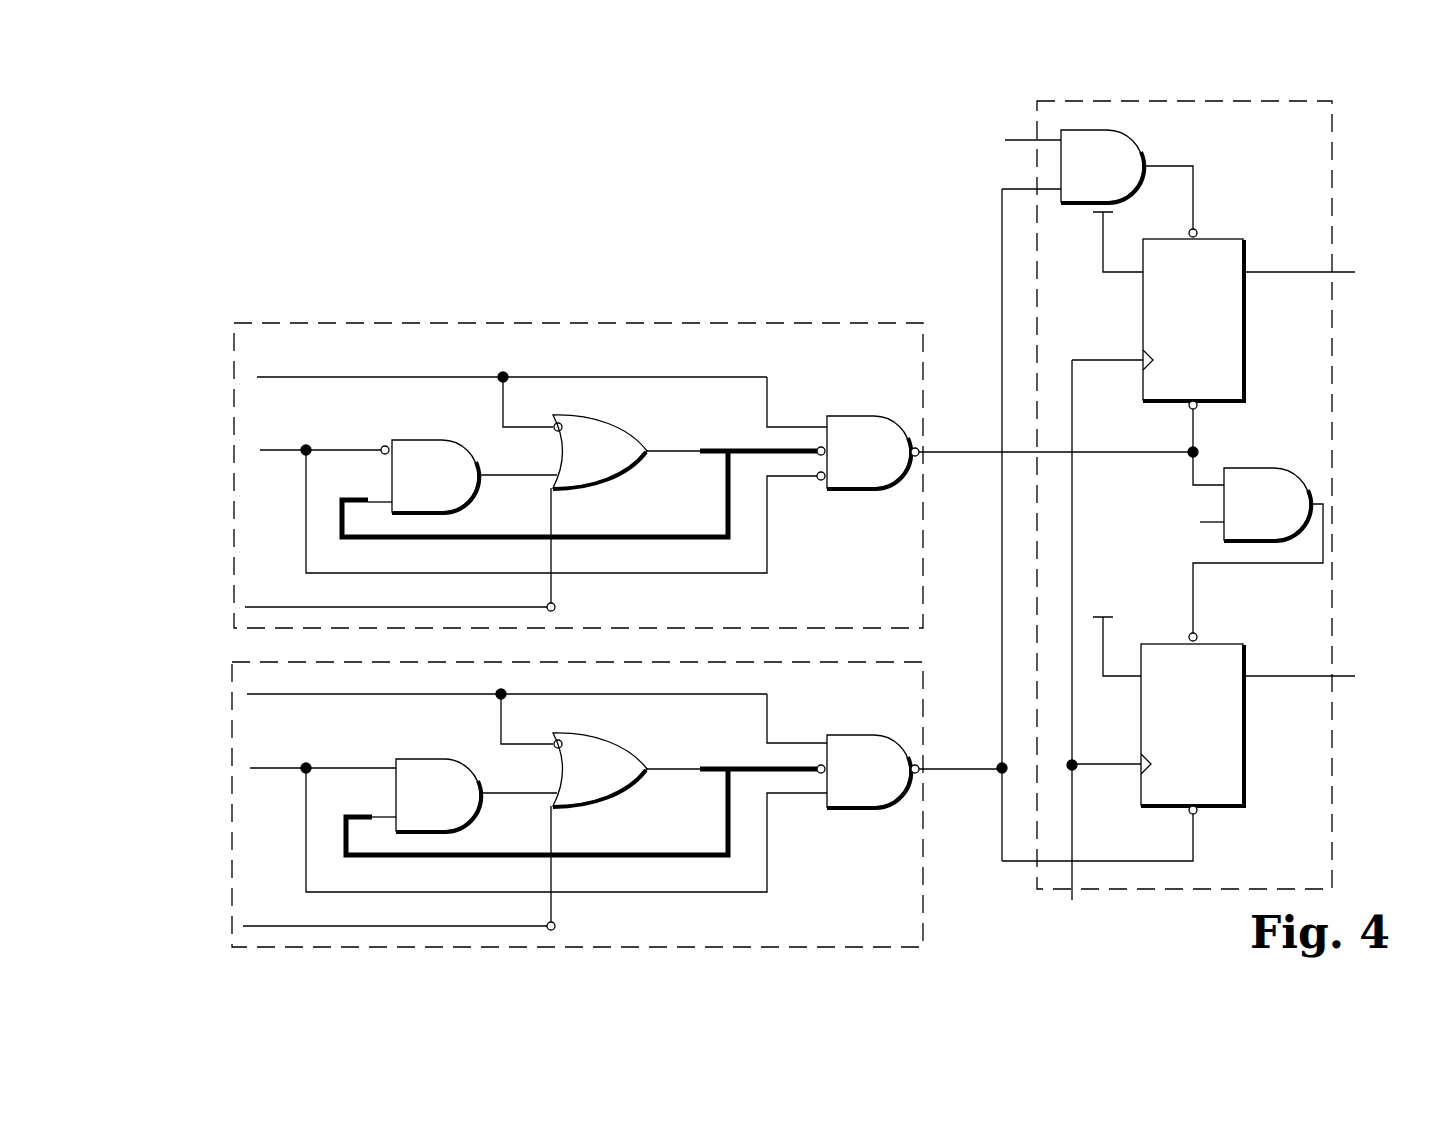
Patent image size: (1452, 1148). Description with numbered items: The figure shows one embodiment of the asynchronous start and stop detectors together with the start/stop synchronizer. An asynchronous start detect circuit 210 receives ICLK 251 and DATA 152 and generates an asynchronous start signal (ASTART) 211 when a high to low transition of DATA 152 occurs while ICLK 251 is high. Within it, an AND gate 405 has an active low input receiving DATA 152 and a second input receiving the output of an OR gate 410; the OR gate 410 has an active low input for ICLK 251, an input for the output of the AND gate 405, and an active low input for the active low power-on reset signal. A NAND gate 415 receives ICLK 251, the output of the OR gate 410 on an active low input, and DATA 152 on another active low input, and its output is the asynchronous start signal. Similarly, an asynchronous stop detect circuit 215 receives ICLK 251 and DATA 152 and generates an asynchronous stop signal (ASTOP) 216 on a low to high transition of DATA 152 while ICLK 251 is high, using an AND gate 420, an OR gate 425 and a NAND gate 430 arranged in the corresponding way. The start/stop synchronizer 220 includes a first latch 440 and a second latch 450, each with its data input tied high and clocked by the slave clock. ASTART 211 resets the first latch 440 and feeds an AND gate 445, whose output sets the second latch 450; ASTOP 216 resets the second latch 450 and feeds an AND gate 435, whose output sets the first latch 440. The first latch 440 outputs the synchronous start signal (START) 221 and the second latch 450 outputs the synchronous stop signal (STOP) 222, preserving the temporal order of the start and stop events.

The data signal (DATA) 152 is at (352, 449).
The ICLK 251 is at (350, 375).
The asynchronous start detect circuit 210 is at (578, 475).
The asynchronous stop detect circuit 215 is at (577, 804).
The start/stop synchronizer 220 is at (1167, 513).
The asynchronous start signal (ASTART) 211 is at (973, 458).
The asynchronous stop signal (ASTOP) 216 is at (973, 773).
The synchronous start signal (START) 221 is at (1298, 272).
The synchronous stop signal (STOP) 222 is at (1304, 677).
The AND gate 405 is at (462, 476).
The OR gate 410 is at (531, 513).
The NAND gate 415 is at (868, 452).
The AND gate 420 is at (464, 795).
The OR gate 425 is at (530, 831).
The NAND gate 430 is at (868, 771).
The AND gate 435 is at (1070, 182).
The first latch 440 is at (1158, 334).
The AND gate 445 is at (1229, 546).
The second latch 450 is at (1123, 739).